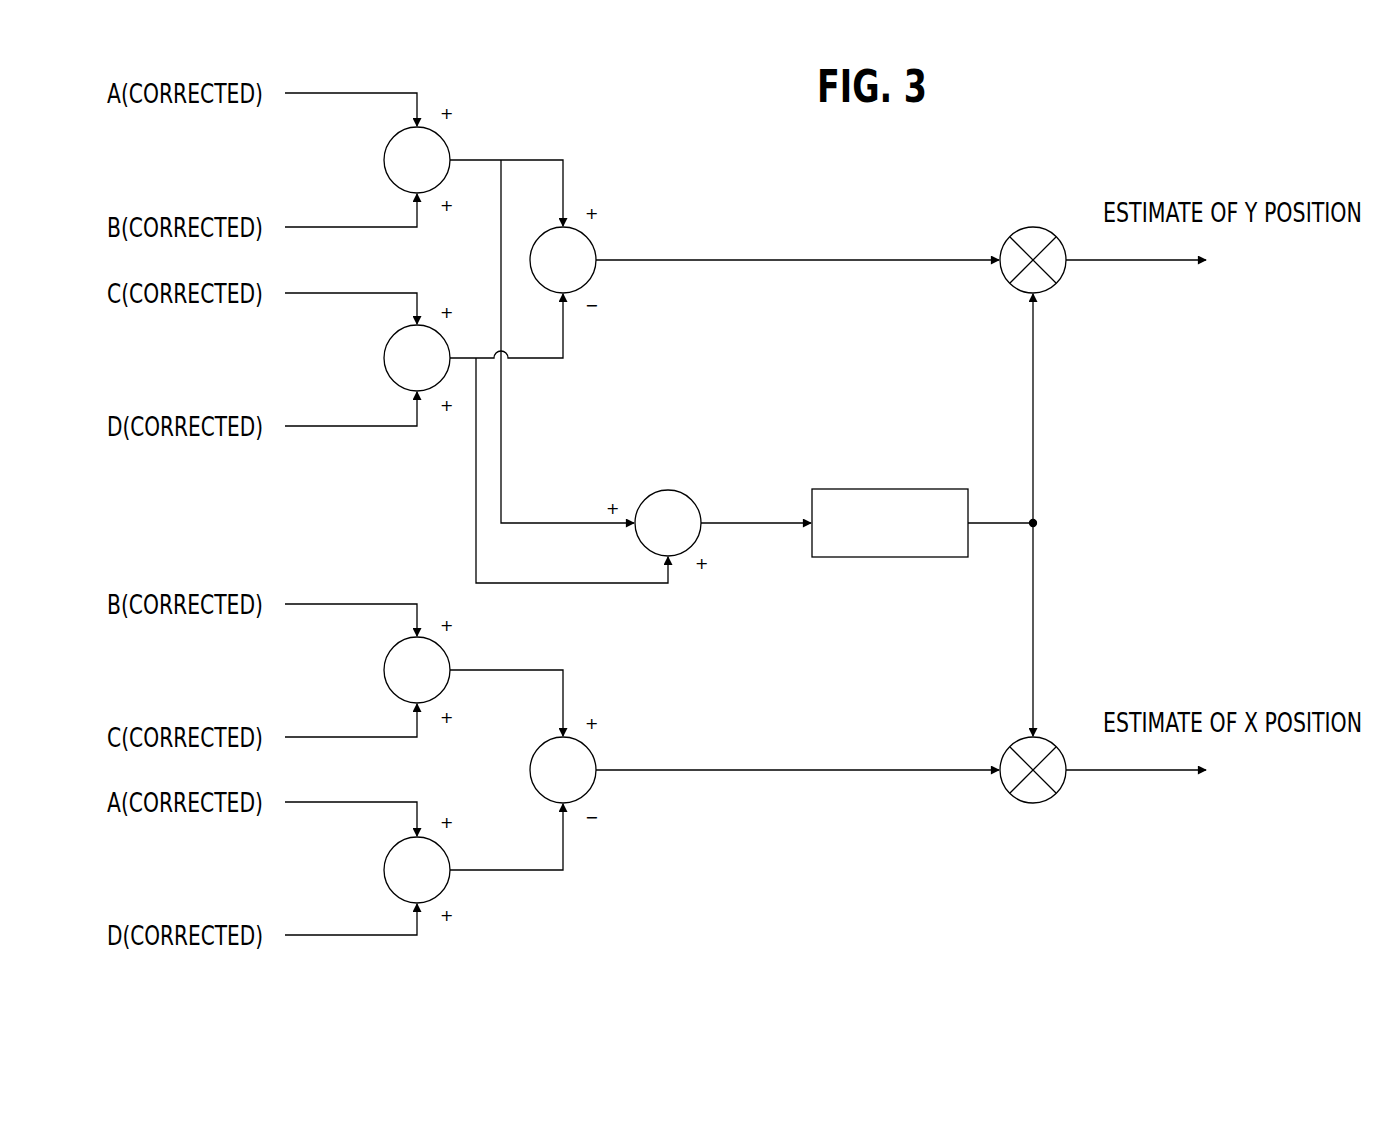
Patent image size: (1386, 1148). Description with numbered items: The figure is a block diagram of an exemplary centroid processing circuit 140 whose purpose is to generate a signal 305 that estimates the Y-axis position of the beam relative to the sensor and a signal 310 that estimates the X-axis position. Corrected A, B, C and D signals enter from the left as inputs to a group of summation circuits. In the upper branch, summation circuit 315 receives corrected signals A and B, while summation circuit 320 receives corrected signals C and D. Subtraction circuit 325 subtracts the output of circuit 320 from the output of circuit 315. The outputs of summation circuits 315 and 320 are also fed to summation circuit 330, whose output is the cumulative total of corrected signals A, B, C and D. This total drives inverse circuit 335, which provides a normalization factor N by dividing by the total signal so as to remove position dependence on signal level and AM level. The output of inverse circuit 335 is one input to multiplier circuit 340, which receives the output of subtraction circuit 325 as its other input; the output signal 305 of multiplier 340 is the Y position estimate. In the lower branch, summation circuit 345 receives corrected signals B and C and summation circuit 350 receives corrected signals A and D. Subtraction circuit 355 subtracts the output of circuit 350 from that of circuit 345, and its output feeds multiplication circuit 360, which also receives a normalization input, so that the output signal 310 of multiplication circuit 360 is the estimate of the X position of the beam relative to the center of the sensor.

The centroid processing circuit 140 is at (673, 116).
The signal 305 is at (1127, 262).
The signal 310 is at (1110, 773).
The summation circuit 315 is at (440, 133).
The summation circuit 320 is at (440, 332).
The subtraction circuit 325 is at (588, 235).
The summation circuit 330 is at (666, 491).
The inverse circuit 335 is at (877, 489).
The multiplier circuit 340 is at (1030, 228).
The summation circuit 345 is at (445, 652).
The summation circuit 350 is at (447, 850).
The subtraction circuit 355 is at (592, 746).
The multiplication circuit 360 is at (1012, 743).